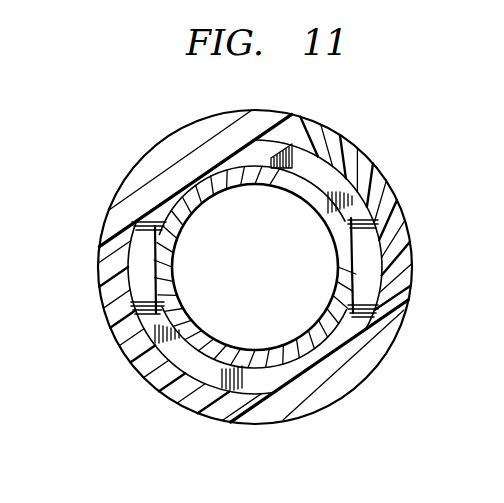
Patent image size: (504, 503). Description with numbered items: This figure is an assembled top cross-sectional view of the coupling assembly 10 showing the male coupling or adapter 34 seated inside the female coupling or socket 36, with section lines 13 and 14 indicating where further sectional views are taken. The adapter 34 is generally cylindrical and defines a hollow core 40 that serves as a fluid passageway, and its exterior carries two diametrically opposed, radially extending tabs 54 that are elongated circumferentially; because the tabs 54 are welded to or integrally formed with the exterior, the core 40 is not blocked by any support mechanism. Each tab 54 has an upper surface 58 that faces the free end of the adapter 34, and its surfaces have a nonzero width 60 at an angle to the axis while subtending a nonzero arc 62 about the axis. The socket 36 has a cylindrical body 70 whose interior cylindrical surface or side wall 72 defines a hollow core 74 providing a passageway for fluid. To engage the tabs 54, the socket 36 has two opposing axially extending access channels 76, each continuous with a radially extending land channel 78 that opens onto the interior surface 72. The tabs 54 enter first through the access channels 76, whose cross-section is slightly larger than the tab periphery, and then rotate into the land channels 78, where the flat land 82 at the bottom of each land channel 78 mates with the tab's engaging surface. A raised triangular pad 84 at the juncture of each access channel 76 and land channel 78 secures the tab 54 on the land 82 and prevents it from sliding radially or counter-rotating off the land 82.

The coupling assembly 10 is at (134, 130).
The section line 13 is at (432, 212).
The section line 14 is at (166, 102).
The male coupling 34 is at (320, 207).
The socket 36 is at (387, 352).
The hollow core 40 is at (270, 280).
The tab 54 is at (140, 215).
The upper surface 58 is at (168, 292).
The width 60 is at (185, 248).
The arc 62 is at (178, 268).
The cylindrical body 70 is at (265, 418).
The interior cylindrical surface 72 is at (277, 350).
The hollow core 74 is at (267, 227).
The access channel 76 is at (128, 232).
The land channel 78 is at (343, 158).
The land 82 is at (296, 140).
The raised triangular pad 84 is at (383, 196).